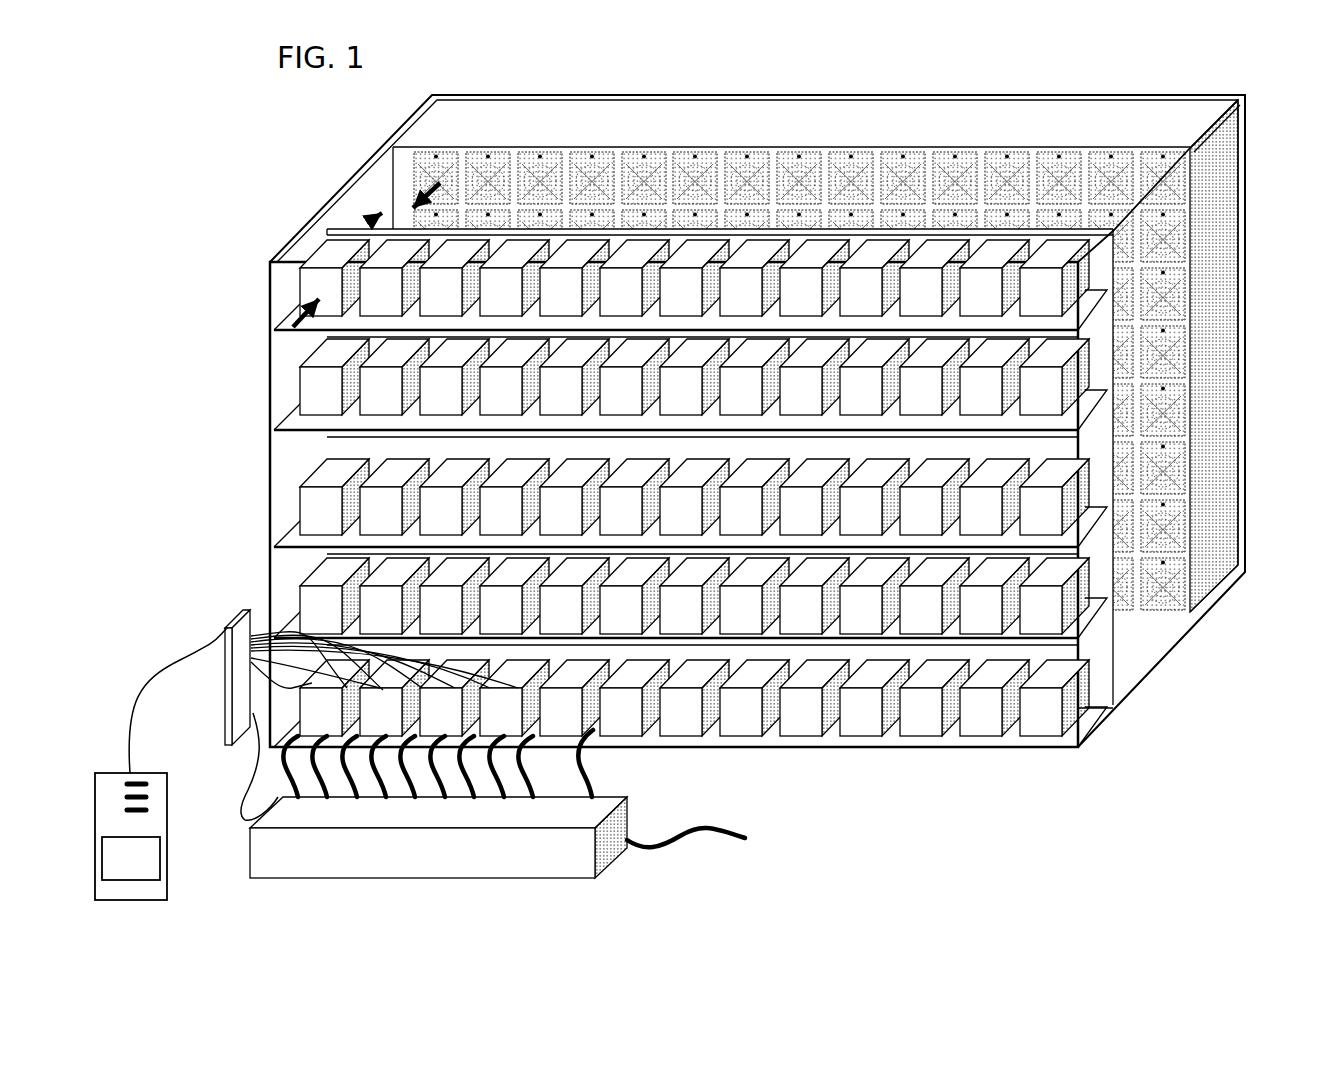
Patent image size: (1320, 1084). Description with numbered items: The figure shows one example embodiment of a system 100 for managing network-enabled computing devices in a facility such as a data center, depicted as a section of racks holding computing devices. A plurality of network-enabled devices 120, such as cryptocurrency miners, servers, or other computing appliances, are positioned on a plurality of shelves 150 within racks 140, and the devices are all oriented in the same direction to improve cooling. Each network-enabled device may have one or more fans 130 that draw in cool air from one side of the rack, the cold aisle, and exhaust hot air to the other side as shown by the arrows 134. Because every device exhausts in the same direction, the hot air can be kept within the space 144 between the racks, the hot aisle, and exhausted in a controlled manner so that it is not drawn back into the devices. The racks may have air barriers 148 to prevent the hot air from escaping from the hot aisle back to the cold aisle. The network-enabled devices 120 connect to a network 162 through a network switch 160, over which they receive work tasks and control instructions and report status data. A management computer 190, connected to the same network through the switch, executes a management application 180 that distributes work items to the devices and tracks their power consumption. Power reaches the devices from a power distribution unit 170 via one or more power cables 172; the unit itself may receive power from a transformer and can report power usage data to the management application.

The system 100 is at (1230, 78).
The network-enabled devices 120 is at (293, 322).
The fans 130 is at (418, 173).
The arrows 134 is at (270, 315).
The racks 140 is at (1118, 419).
The space 144 is at (1175, 641).
The air barriers 148 is at (1140, 612).
The shelves 150 is at (270, 421).
The network switch 160 is at (224, 690).
The network 162 is at (260, 606).
The power distribution unit 170 is at (473, 868).
The power cables 172 is at (620, 775).
The management application 180 is at (152, 871).
The management computer 190 is at (165, 900).